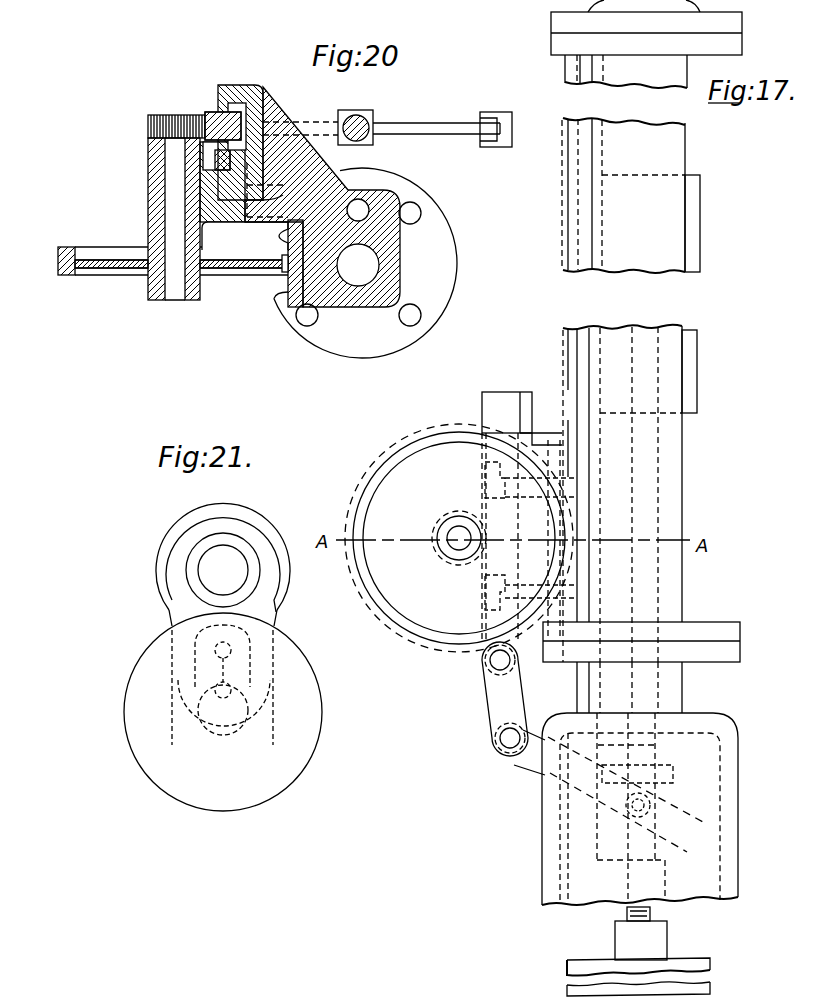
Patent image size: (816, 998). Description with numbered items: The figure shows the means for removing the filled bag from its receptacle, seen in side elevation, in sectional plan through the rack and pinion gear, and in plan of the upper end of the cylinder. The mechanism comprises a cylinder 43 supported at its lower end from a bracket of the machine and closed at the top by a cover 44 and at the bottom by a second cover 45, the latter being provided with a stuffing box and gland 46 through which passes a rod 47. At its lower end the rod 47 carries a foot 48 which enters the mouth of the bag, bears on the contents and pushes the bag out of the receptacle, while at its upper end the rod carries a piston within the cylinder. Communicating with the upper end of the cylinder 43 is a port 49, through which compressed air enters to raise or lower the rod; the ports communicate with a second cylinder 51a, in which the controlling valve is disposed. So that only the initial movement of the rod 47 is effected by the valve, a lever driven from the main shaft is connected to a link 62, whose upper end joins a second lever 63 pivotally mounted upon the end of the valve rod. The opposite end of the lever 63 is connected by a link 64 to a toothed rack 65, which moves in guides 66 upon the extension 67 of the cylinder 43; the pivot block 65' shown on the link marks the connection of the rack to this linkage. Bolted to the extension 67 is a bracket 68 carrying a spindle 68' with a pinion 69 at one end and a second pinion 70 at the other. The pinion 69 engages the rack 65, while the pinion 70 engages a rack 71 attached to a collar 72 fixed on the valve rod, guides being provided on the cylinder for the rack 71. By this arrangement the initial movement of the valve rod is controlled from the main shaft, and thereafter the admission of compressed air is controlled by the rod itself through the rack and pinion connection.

In FIG. 20, the cylinder 43 is at (404, 262).
In FIG. 17, the cylinder 43 is at (631, 195).
In FIG. 21, the cylinder 43 is at (208, 742).
In FIG. 17, the cover 44 is at (552, 22).
In FIG. 21, the cover 44 is at (223, 657).
In FIG. 17, the second cover 45 is at (718, 658).
In FIG. 17, the gland 46 is at (666, 762).
In FIG. 17, the rod 47 is at (652, 915).
In FIG. 17, the foot 48 is at (678, 965).
In FIG. 21, the port 49 is at (225, 668).
In FIG. 21, the second cylinder 51a is at (223, 570).
In FIG. 20, the link 62 is at (500, 147).
In FIG. 20, the second lever 63 is at (450, 133).
In FIG. 17, the second lever 63 is at (524, 758).
In FIG. 17, the link 64 is at (505, 699).
In FIG. 20, the toothed rack 65 is at (214, 142).
In FIG. 17, the toothed rack 65 is at (507, 546).
In FIG. 20, the pivot block 65' is at (374, 123).
In FIG. 17, the guides 66 is at (522, 447).
In FIG. 20, the extension 67 is at (280, 207).
In FIG. 20, the bracket 68 is at (244, 196).
In FIG. 17, the spindle 68' is at (455, 556).
In FIG. 20, the pinion 69 is at (152, 138).
In FIG. 20, the second pinion 70 is at (118, 250).
In FIG. 17, the second pinion 70 is at (431, 634).
In FIG. 20, the rack 71 is at (290, 262).
In FIG. 17, the rack 71 is at (570, 363).
In FIG. 17, the collar 72 is at (585, 875).